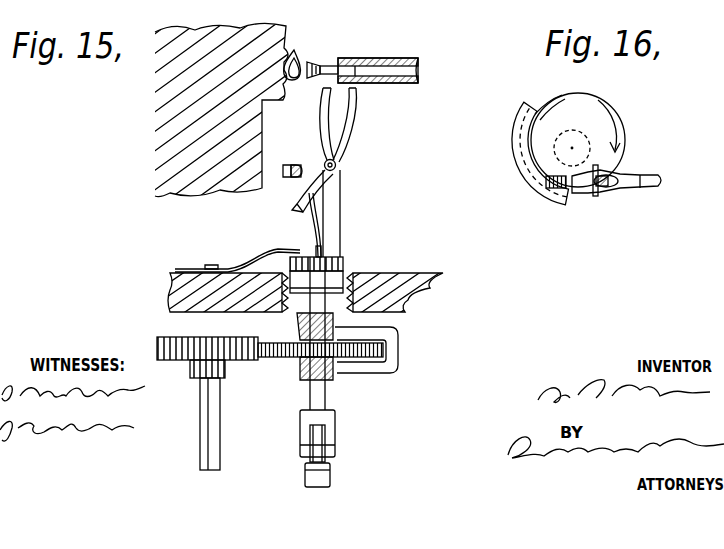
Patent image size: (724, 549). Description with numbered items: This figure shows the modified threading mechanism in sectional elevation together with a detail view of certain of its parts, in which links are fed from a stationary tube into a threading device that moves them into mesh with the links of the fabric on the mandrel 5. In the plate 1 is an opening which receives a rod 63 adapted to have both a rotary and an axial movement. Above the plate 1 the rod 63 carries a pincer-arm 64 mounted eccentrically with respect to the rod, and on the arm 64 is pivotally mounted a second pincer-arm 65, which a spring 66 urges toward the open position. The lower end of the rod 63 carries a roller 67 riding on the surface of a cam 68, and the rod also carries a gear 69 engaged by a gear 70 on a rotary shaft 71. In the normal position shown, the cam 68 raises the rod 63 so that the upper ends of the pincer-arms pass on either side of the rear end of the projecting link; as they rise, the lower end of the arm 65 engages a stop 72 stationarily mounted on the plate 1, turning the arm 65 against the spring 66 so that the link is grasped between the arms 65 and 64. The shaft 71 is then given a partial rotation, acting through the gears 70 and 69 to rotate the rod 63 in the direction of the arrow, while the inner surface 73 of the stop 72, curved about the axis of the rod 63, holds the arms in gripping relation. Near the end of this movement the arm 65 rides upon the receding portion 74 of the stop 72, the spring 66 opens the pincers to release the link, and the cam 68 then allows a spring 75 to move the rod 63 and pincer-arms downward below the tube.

In FIG. 15, the plate 1 is at (234, 282).
In FIG. 15, the mandrel 5 is at (157, 150).
In FIG. 15, the rod 63 is at (344, 276).
In FIG. 16, the rod 63 is at (576, 136).
In FIG. 15, the pincer-arm 64 is at (340, 192).
In FIG. 16, the pincer-arm 64 is at (596, 197).
In FIG. 15, the second pincer-arm 65 is at (348, 138).
In FIG. 16, the second pincer-arm 65 is at (656, 190).
In FIG. 15, the spring 66 is at (311, 218).
In FIG. 15, the roller 67 is at (322, 441).
In FIG. 15, the cam 68 is at (305, 470).
In FIG. 15, the gear 69 is at (285, 358).
In FIG. 15, the gear 70 is at (160, 343).
In FIG. 15, the rotary shaft 71 is at (218, 414).
In FIG. 15, the stop 72 is at (288, 164).
In FIG. 16, the stop 72 is at (552, 196).
In FIG. 16, the curved inner surface 73 is at (541, 170).
In FIG. 16, the receding portion 74 is at (540, 116).
In FIG. 15, the spring 75 is at (264, 256).